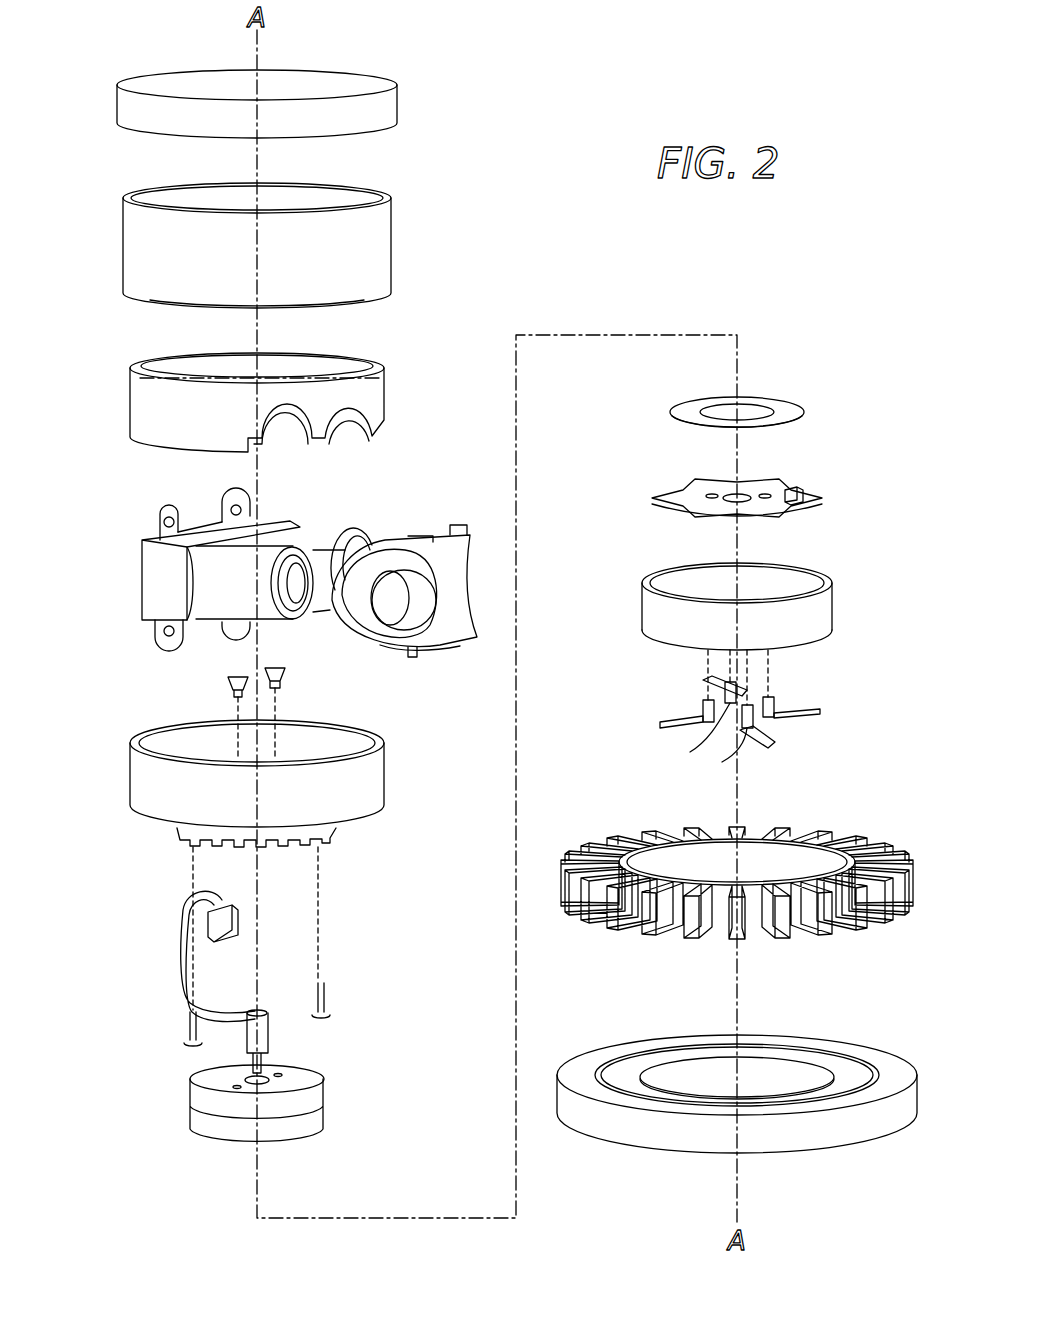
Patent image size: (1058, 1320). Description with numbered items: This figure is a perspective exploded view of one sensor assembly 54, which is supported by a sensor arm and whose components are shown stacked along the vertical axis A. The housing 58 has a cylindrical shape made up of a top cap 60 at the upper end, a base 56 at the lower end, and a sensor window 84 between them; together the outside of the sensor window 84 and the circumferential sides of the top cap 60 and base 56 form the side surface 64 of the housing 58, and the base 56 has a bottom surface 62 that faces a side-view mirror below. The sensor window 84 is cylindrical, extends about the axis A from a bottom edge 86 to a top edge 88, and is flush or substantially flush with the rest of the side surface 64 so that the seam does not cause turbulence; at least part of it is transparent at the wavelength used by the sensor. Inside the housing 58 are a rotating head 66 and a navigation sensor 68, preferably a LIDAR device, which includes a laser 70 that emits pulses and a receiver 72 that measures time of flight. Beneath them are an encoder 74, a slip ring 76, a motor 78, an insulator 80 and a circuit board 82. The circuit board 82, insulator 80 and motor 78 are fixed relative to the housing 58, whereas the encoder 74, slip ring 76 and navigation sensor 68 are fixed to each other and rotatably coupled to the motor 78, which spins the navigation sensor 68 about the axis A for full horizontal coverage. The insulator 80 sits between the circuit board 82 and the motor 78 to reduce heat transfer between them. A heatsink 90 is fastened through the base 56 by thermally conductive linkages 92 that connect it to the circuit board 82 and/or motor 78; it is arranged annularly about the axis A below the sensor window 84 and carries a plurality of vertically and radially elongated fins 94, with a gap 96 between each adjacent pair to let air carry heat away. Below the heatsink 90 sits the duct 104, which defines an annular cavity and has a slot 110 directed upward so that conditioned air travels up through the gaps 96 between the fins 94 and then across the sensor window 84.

The sensor assembly 54 is at (484, 109).
The base 56 is at (705, 626).
The housing 58 is at (102, 172).
The top cap 60 is at (177, 70).
The bottom surface 62 is at (665, 650).
The side surface 64 is at (393, 240).
The rotating head 66 is at (130, 400).
The navigation sensor 68 is at (129, 592).
The laser 70 is at (282, 540).
The receiver 72 is at (326, 545).
The encoder 74 is at (130, 767).
The slip ring 76 is at (178, 970).
The motor 78 is at (192, 1100).
The insulator 80 is at (672, 413).
The circuit board 82 is at (655, 503).
The sensor window 84 is at (392, 275).
The bottom edge 86 is at (368, 302).
The top edge 88 is at (345, 205).
The heatsink 90 is at (758, 885).
The linkages 92 is at (710, 740).
The fins 94 is at (875, 915).
The gaps 96 is at (780, 925).
The duct 104 is at (741, 1120).
The slot 110 is at (655, 1100).